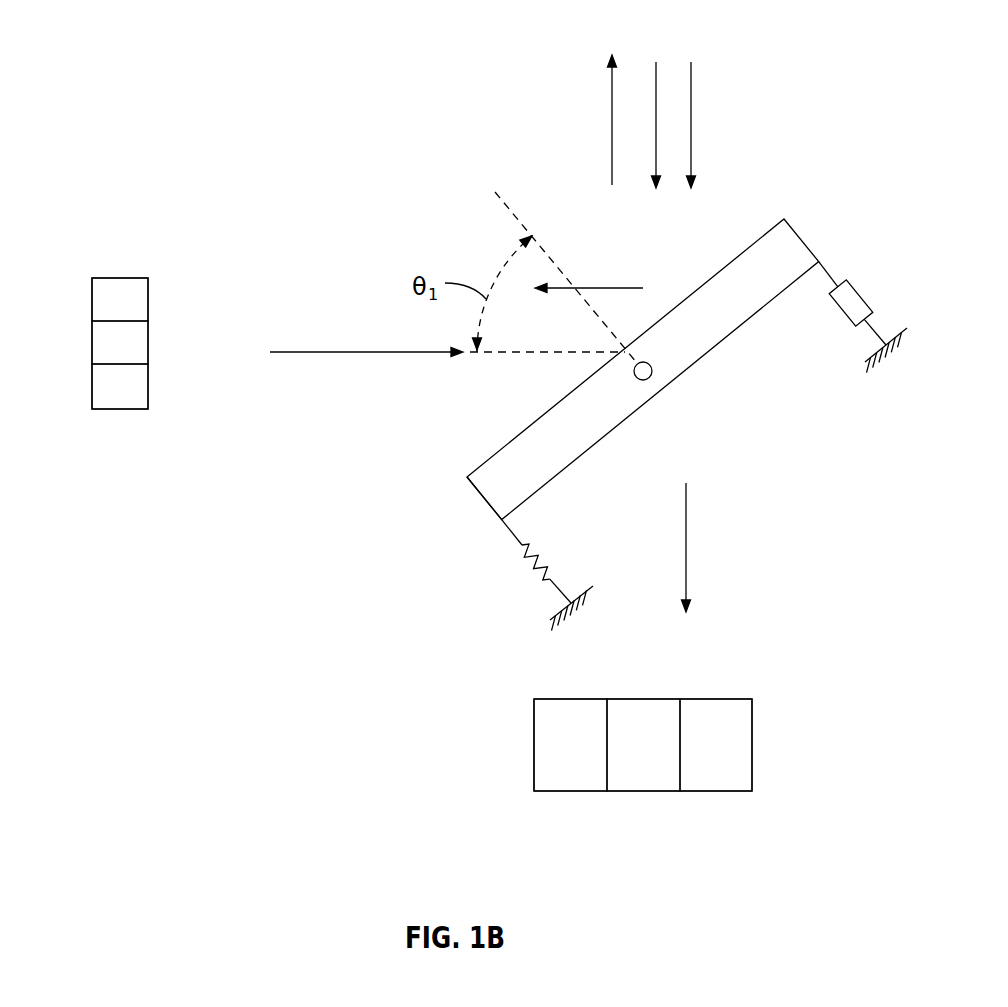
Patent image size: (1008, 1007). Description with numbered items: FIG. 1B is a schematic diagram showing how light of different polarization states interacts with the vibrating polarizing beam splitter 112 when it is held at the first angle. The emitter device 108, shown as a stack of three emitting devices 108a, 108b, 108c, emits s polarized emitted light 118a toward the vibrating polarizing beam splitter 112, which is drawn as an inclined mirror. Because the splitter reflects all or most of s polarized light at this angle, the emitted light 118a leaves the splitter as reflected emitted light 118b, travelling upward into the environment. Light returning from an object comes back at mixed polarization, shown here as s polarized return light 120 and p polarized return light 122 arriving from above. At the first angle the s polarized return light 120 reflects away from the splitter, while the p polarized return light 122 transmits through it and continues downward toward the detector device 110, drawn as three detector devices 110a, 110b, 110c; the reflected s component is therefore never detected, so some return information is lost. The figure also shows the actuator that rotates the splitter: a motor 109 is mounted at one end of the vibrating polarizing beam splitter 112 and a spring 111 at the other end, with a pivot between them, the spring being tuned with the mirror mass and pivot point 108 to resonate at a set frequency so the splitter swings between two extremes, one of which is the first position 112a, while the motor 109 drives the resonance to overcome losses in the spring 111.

The emitter device 108 is at (379, 347).
The emitting device 108a is at (148, 300).
The emitting device 108b is at (148, 340).
The emitting device 108c is at (148, 383).
The motor 109 is at (857, 287).
The detector device 110 is at (642, 786).
The detector device 110a is at (534, 745).
The detector device 110b is at (643, 699).
The detector device 110c is at (763, 745).
The spring 111 is at (548, 553).
The vibrating polarizing beam splitter 112 is at (621, 358).
The first position 112a is at (467, 477).
The emitted light 118a is at (363, 352).
The emitted light 118b is at (610, 120).
The s polarized return light 120 is at (657, 75).
The p polarized return light 122 is at (692, 125).